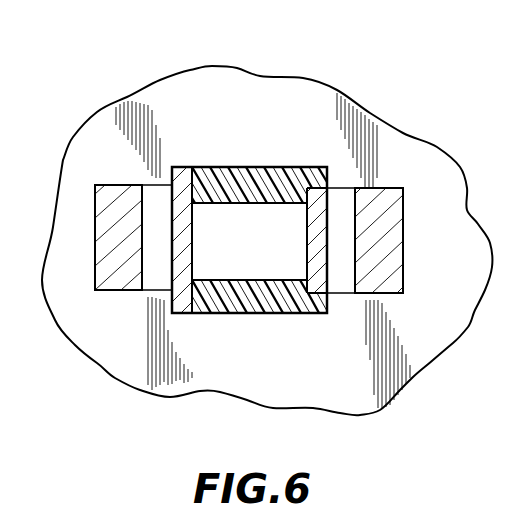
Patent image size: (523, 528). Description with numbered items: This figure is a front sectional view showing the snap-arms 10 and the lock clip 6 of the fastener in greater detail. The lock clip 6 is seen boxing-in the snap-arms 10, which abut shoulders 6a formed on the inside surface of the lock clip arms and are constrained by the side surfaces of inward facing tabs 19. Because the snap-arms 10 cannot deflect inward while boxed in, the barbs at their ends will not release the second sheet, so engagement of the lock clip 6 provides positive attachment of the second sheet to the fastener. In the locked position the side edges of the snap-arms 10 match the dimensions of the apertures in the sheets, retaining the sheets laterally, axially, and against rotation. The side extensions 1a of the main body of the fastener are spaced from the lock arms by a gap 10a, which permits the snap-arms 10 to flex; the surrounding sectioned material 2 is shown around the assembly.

The housing body 2 is at (293, 101).
The side extensions 1a is at (113, 255).
The lock clip 6 is at (228, 168).
The shoulders 6a is at (183, 192).
The snap-arms 10 is at (313, 217).
The gap 10a is at (165, 207).
The inward facing tabs 19 is at (283, 279).